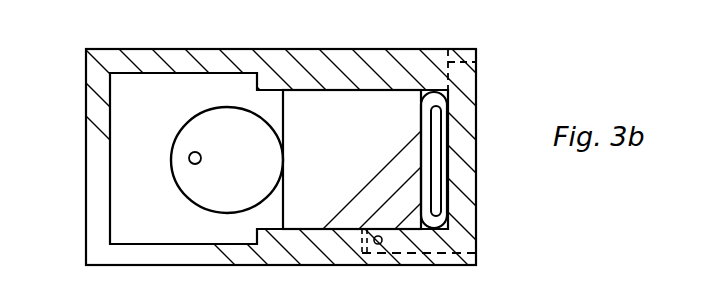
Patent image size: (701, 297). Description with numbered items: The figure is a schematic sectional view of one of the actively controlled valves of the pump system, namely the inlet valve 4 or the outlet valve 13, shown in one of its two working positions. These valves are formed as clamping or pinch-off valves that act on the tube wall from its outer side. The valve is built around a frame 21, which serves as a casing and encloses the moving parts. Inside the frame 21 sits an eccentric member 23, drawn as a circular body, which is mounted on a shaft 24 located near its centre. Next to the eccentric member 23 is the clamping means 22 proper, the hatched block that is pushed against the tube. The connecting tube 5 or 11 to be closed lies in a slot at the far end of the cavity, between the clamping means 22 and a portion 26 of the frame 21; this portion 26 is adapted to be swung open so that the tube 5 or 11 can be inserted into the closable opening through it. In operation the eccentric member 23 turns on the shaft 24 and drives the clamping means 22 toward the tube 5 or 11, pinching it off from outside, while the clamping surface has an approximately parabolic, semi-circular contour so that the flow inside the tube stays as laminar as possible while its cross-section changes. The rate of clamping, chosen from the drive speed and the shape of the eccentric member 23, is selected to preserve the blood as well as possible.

The inlet valve 4 is at (350, 148).
The outlet valve 13 is at (84, 78).
The frame 21 is at (189, 58).
The clamping means 22 is at (377, 176).
The eccentric member 23 is at (233, 122).
The shaft 24 is at (201, 158).
The portion of the frame 26 is at (468, 110).
The connecting tube 5 is at (485, 160).
The connecting tube 11 is at (444, 215).